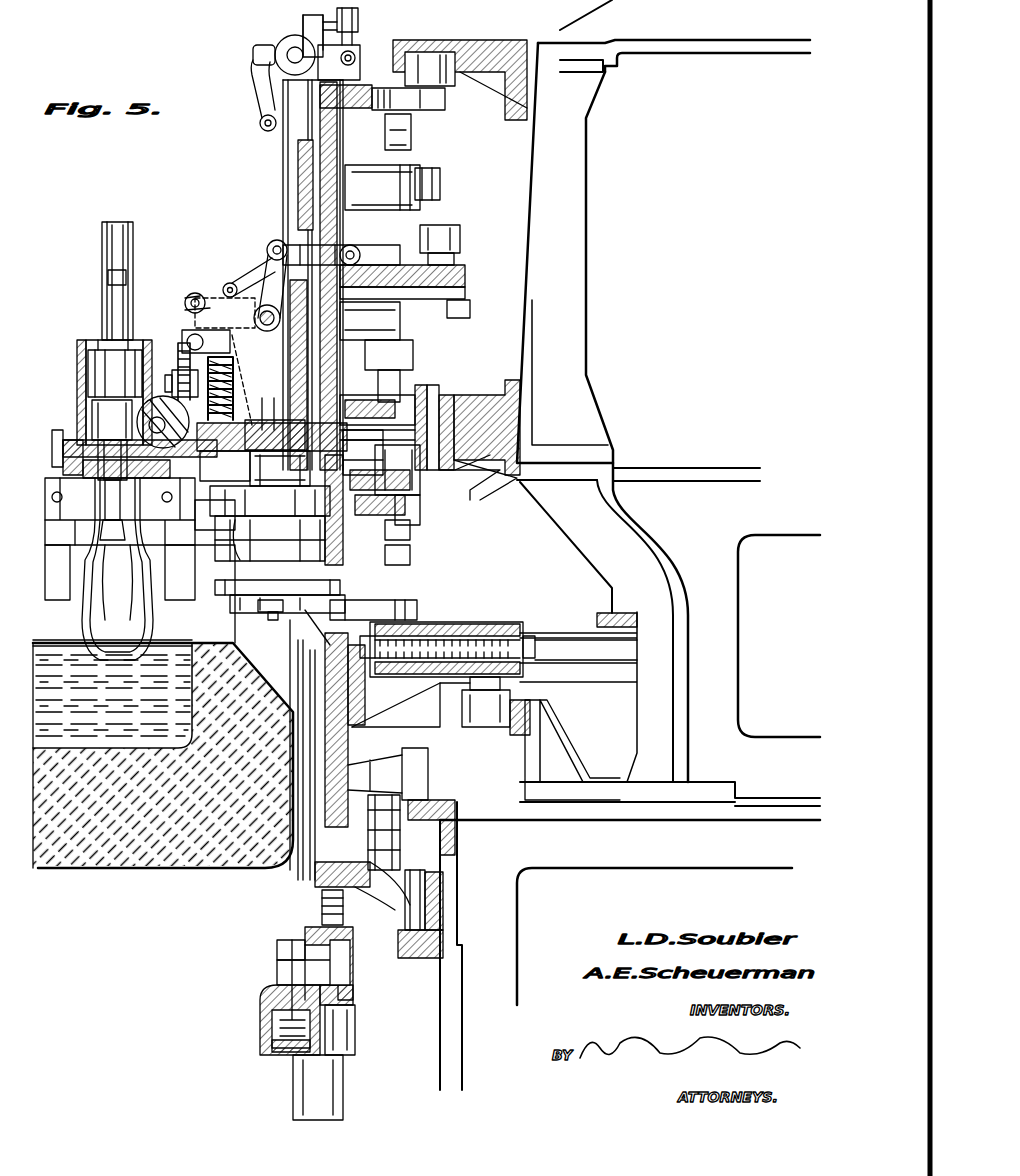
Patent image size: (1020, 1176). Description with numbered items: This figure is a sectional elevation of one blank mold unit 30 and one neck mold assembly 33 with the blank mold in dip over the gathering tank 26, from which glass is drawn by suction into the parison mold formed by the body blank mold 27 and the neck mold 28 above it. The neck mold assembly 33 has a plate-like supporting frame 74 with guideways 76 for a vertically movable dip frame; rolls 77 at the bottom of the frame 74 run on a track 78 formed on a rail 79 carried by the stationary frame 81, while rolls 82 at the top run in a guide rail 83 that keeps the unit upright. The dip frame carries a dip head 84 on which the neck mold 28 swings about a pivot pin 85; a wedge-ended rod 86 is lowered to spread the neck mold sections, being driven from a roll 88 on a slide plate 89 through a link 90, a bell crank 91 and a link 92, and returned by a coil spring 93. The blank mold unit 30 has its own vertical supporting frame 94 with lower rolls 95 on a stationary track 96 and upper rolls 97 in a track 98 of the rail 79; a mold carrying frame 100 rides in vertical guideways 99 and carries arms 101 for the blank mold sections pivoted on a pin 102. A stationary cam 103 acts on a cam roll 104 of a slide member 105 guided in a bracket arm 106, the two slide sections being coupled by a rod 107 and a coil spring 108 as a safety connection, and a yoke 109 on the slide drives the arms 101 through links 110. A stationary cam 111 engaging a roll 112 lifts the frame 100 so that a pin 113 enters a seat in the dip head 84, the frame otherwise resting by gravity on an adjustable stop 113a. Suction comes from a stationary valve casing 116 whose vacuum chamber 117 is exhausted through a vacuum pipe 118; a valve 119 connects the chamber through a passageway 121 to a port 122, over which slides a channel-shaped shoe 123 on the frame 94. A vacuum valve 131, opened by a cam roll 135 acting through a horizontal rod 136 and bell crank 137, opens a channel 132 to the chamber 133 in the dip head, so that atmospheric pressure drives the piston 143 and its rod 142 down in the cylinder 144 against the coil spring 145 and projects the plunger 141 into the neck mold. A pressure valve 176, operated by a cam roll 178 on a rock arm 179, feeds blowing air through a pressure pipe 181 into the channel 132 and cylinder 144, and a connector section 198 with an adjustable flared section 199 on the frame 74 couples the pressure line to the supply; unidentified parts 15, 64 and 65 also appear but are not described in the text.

The plunger 15 is at (303, 160).
The gathering tank 26 is at (95, 862).
The body blank mold 27 is at (235, 625).
The neck mold 28 is at (232, 555).
The blank mold unit 30 is at (433, 569).
The neck mold assembly 33 is at (262, 219).
The bracket 64 is at (408, 135).
The bearing 65 is at (402, 360).
The supporting frame 74 is at (326, 378).
The guideways 76 is at (300, 118).
The rolls 77 is at (434, 390).
The track 78 is at (385, 444).
The rail 79 is at (500, 470).
The stationary frame 81 is at (566, 298).
The rolls 82 is at (440, 60).
The guide rail 83 is at (410, 48).
The dip head 84 is at (55, 450).
The pivot pin 85 is at (268, 420).
The rod 86 is at (233, 405).
The roll 88 is at (462, 238).
The slide plate 89 is at (465, 275).
The link 90 is at (340, 245).
The bell crank 91 is at (270, 255).
The link 92 is at (180, 305).
The coil spring 93 is at (232, 385).
The vertical supporting frame 94 is at (310, 875).
The rolls 95 is at (415, 870).
The stationary track 96 is at (425, 958).
The upper rolls 97 is at (395, 478).
The track 98 is at (500, 468).
The vertical guideways 99 is at (322, 848).
The mold carrying frame 100 is at (325, 648).
The arms 101 is at (225, 587).
The pivot pin 102 is at (302, 625).
The stationary cam 103 is at (515, 735).
The cam roll 104 is at (470, 720).
The slide member 105 is at (480, 626).
The bracket arm 106 is at (590, 670).
The rod 107 is at (512, 638).
The coil spring 108 is at (432, 626).
The yoke 109 is at (393, 612).
The links 110 is at (232, 602).
The stationary cam 111 is at (428, 790).
The roll 112 is at (425, 758).
The pin 113 is at (262, 614).
The adjustable stop 113a is at (322, 898).
The valve casing 116 is at (262, 1003).
The vacuum chamber 117 is at (265, 1040).
The vacuum pipe 118 is at (333, 1093).
The valve 119 is at (268, 1024).
The passageway 121 is at (355, 1009).
The port 122 is at (352, 990).
The shoe 123 is at (312, 937).
The vacuum valve 131 is at (182, 342).
The channel 132 is at (198, 390).
The air pressure and vacuum chamber 133 is at (228, 520).
The cam roll 135 is at (470, 303).
The horizontal rod 136 is at (262, 275).
The bell crank 137 is at (232, 283).
The plunger 141 is at (117, 569).
The rod 142 is at (92, 378).
The piston 143 is at (88, 402).
The cylinder 144 is at (80, 355).
The coil spring 145 is at (100, 290).
The pressure valve 176 is at (292, 42).
The cam roll 178 is at (358, 22).
The rock arm 179 is at (353, 41).
The pressure pipe 181 is at (258, 104).
The connector section 198 is at (400, 195).
The adjustable section 199 is at (432, 172).